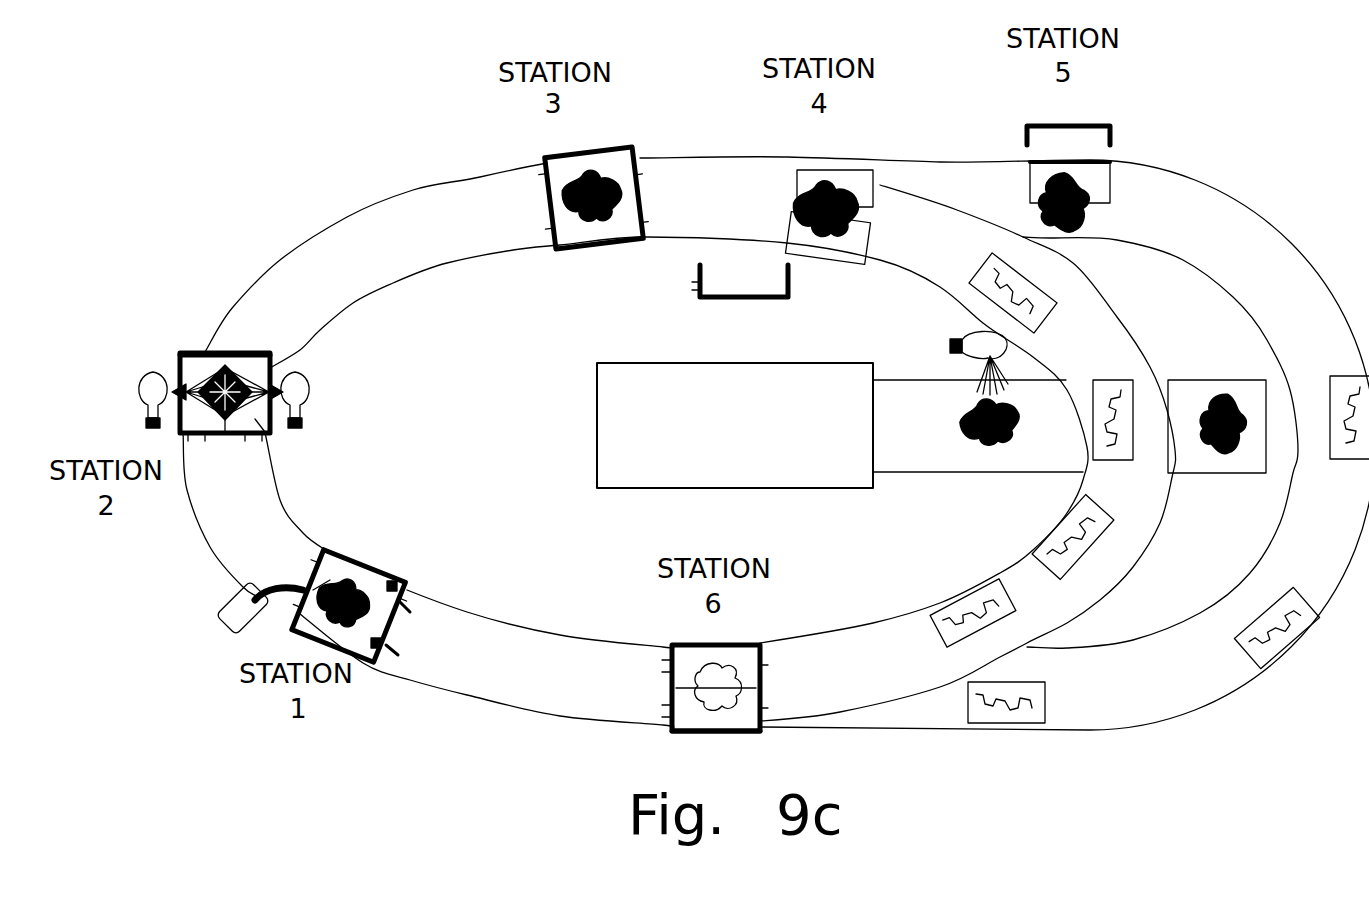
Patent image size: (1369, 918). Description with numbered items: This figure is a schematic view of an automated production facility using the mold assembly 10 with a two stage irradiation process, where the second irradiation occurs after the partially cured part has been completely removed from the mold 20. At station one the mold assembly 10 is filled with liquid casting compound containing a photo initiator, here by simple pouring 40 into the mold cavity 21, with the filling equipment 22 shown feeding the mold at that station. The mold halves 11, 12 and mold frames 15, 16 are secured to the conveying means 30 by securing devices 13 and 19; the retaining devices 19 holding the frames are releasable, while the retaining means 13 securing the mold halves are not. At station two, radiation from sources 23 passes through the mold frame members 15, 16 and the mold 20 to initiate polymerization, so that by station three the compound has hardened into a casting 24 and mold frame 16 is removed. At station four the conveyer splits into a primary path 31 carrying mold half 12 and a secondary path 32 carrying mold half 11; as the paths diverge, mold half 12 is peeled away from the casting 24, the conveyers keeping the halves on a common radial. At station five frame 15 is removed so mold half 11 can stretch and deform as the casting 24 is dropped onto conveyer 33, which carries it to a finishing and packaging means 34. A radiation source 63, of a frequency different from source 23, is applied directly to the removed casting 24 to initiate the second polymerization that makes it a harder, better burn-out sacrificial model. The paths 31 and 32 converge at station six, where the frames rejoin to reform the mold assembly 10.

The mold assembly 10 is at (642, 155).
The mold half 11 is at (1030, 177).
The mold half 12 is at (848, 255).
The securing device 13 is at (389, 580).
The mold frame 15 is at (1116, 127).
The mold frame 16 is at (273, 365).
The retaining device 19 is at (400, 610).
The mold 20 is at (272, 430).
The mold cavity 21 is at (313, 590).
The ink applicator 22 is at (228, 360).
The radiation source 23 is at (145, 398).
The casting 24 is at (588, 215).
The conveying means 30 is at (558, 670).
The primary path 31 is at (929, 253).
The secondary path 32 is at (938, 172).
The conveyer 33 is at (922, 445).
The finishing and packaging means 34 is at (747, 434).
The simple pouring 40 is at (230, 617).
The radiation source 63 is at (956, 363).